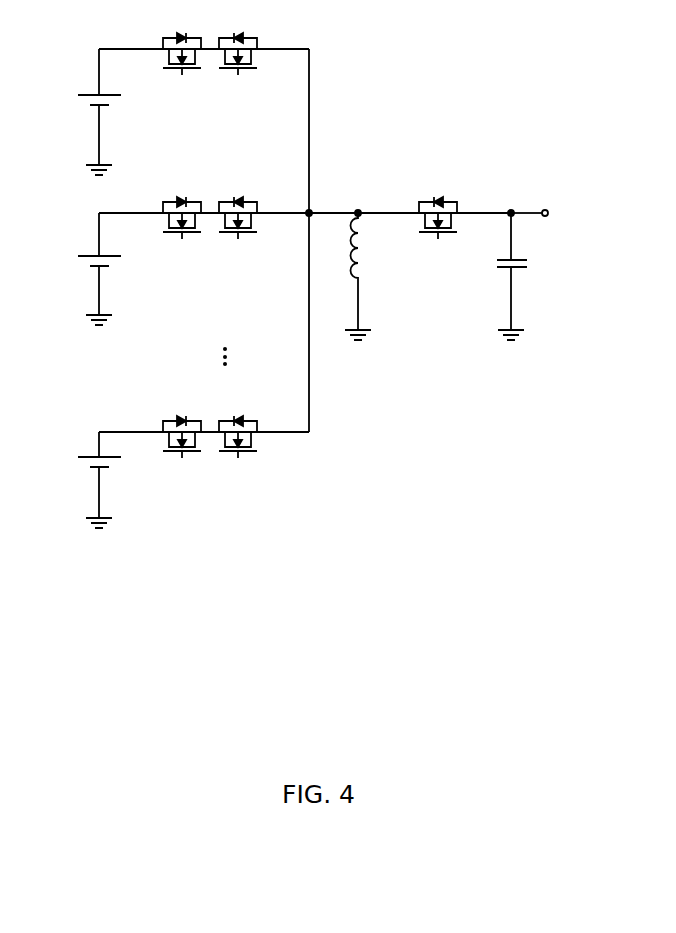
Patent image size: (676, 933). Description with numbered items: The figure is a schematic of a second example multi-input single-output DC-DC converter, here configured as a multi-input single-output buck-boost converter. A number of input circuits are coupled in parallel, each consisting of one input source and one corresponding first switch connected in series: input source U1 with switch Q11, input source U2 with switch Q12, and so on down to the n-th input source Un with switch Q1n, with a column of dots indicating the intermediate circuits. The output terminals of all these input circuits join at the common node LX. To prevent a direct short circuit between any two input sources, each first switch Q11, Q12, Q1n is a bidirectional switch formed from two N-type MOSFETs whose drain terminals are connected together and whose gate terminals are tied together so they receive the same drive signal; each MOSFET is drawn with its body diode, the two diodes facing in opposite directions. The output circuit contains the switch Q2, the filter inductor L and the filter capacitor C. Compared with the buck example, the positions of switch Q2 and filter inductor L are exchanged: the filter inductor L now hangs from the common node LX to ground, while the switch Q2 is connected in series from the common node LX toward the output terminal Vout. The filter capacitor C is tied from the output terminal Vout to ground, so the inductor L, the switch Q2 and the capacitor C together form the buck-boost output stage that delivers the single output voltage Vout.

The input source U1 is at (105, 112).
The input source U2 is at (102, 269).
The input source Un is at (101, 480).
The first switch Q11 is at (215, 48).
The first switch Q12 is at (215, 212).
The first switch Q1n is at (215, 431).
The common node LX is at (332, 202).
The filter inductor L is at (349, 275).
The switch Q2 is at (434, 210).
The output voltage Vout is at (542, 200).
The filter capacitor C is at (521, 276).